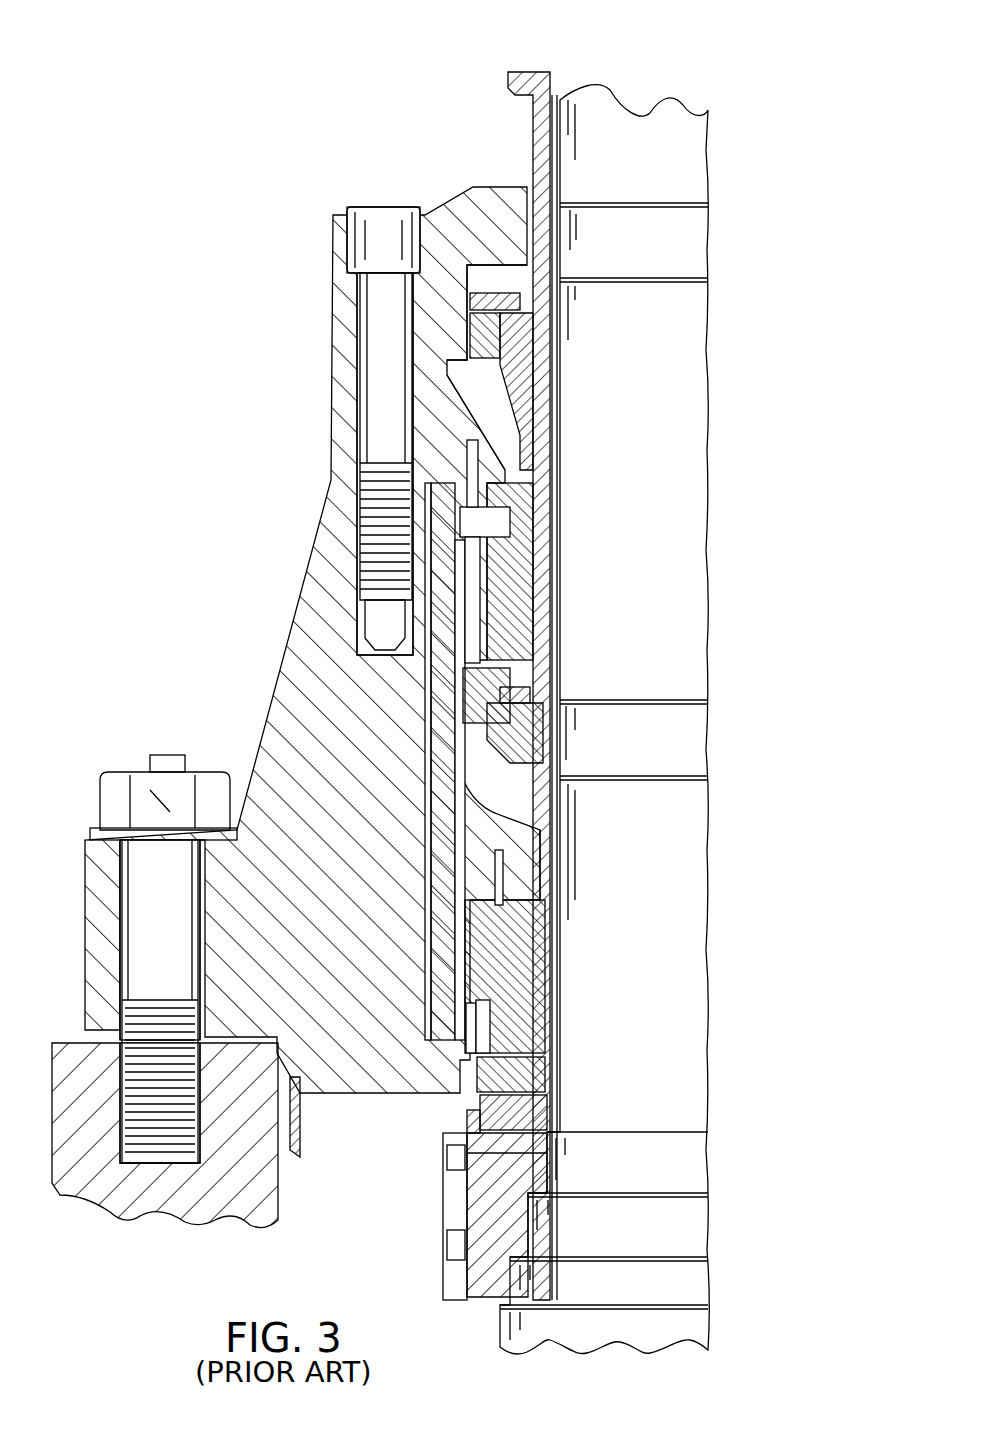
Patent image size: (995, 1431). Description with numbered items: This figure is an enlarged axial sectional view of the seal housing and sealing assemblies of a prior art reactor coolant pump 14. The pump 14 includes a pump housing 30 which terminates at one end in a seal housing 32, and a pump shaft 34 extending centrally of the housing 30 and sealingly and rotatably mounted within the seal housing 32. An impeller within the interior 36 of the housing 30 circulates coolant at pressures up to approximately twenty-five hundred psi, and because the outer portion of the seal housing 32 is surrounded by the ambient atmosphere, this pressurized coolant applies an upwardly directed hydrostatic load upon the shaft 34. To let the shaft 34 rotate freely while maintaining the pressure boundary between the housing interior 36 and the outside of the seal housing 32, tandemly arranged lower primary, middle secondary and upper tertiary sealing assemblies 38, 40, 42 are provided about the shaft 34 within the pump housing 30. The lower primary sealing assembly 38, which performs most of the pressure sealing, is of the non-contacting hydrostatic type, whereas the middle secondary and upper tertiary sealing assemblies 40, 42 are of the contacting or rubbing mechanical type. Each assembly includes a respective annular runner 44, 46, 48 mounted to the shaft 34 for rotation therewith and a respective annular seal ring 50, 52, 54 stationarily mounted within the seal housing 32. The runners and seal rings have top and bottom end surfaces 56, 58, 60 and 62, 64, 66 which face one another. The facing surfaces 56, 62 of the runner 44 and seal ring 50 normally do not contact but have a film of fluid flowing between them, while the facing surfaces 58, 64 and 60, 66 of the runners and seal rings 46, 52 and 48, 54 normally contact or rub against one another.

The reactor coolant pump 14 is at (668, 74).
The pump housing 30 is at (170, 1212).
The seal housing 32 is at (330, 658).
The pump shaft 34 is at (683, 178).
The interior 36 is at (352, 1165).
The lower primary sealing assembly 38 is at (573, 1086).
The middle secondary sealing assembly 40 is at (573, 650).
The upper tertiary sealing assembly 42 is at (586, 362).
The annular runner 44 is at (550, 1120).
The annular runner 46 is at (550, 672).
The annular runner 48 is at (533, 385).
The annular seal ring 50 is at (548, 1035).
The annular seal ring 52 is at (550, 598).
The annular seal ring 54 is at (522, 305).
The top end surface 56 is at (548, 1068).
The top end surface 58 is at (550, 625).
The top end surface 60 is at (502, 335).
The bottom end surface 62 is at (472, 1122).
The bottom end surface 64 is at (462, 688).
The bottom end surface 66 is at (500, 386).